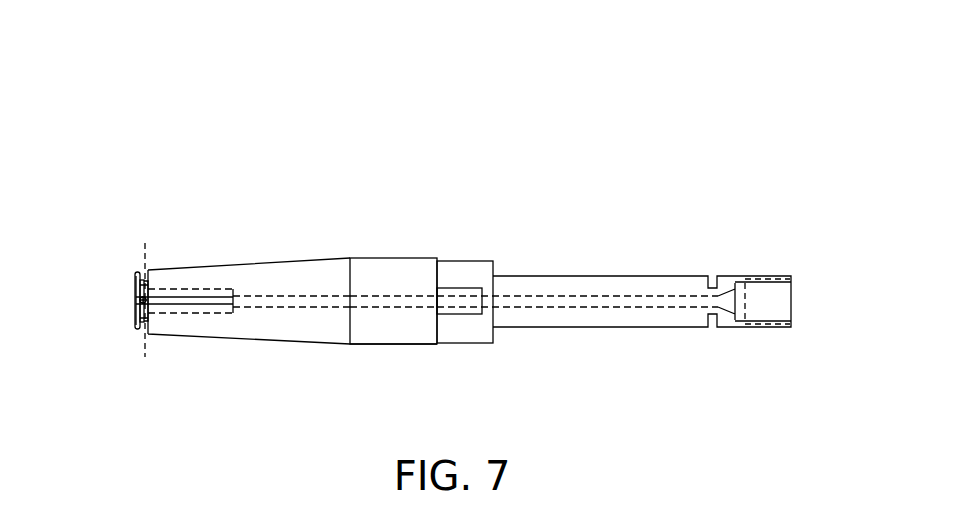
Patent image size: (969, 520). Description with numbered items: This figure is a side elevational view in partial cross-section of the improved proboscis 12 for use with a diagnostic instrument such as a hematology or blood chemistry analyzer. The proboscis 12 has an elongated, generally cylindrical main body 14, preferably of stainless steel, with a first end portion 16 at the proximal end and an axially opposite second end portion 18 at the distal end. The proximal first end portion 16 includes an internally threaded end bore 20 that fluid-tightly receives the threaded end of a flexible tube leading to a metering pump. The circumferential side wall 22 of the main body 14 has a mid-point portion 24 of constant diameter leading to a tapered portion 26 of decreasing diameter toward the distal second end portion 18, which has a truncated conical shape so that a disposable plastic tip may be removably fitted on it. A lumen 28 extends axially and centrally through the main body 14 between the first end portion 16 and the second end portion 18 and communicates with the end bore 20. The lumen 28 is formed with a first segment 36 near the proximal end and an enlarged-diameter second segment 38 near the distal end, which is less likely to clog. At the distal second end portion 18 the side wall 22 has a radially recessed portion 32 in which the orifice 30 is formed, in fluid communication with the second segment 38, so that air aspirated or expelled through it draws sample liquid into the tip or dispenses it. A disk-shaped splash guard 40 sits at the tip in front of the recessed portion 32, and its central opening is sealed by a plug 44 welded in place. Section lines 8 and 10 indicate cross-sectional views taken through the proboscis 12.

The section line 8- 8 is at (104, 241).
The section line 10- 10 is at (144, 248).
The proboscis 12 is at (500, 70).
The main body 14 is at (478, 260).
The first end portion 16 is at (765, 277).
The second end portion 18 is at (228, 265).
The end bore 20 is at (793, 288).
The circumferential side wall 22 is at (473, 345).
The mid-point portion 24 is at (392, 345).
The tapered portion 26 is at (320, 259).
The lumen 28 is at (377, 293).
The orifice 30 is at (135, 306).
The radially recessed portion 32 is at (143, 330).
The first segment 36 is at (273, 307).
The second segment 38 is at (213, 313).
The splash guard 40 is at (138, 273).
The plug 44 is at (137, 313).